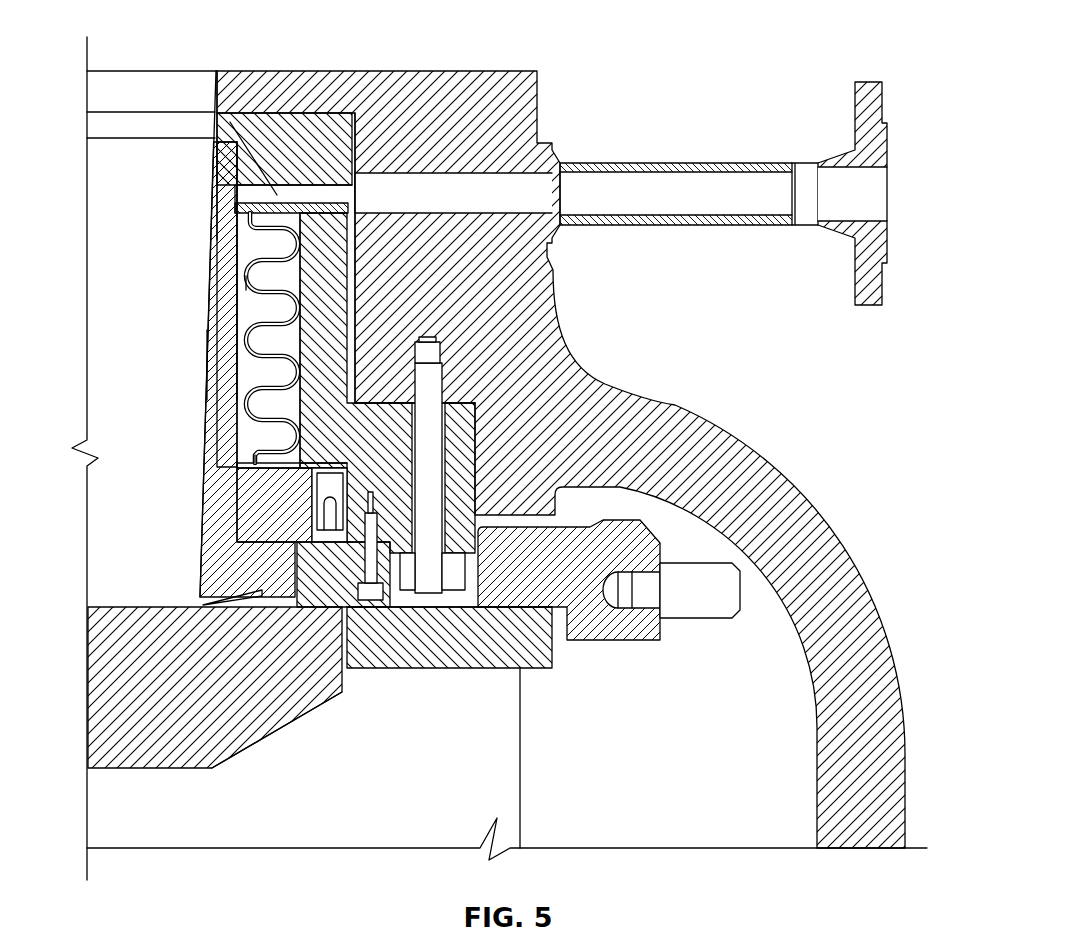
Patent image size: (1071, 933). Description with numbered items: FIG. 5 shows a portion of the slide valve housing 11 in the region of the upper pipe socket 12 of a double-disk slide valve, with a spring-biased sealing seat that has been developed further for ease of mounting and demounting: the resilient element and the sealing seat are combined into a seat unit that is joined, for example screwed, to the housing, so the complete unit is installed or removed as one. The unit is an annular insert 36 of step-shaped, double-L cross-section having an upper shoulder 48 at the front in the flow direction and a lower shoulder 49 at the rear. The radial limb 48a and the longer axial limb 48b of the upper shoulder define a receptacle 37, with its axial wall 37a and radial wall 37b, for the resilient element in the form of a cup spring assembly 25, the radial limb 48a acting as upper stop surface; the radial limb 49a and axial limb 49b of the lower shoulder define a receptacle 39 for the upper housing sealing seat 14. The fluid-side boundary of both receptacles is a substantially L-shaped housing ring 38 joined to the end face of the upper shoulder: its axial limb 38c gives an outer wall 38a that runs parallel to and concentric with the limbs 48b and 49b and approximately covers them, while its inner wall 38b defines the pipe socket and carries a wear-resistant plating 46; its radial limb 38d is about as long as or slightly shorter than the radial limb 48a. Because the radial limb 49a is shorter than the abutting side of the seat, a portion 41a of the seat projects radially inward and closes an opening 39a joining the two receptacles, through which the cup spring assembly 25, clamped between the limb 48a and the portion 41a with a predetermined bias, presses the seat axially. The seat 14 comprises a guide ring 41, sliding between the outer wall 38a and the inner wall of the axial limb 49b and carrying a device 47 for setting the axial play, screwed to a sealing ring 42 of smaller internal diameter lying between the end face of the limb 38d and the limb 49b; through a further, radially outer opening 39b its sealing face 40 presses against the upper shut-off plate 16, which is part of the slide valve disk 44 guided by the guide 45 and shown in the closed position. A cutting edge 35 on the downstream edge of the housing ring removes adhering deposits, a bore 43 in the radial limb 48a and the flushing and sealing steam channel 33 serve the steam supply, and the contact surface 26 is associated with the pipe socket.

The slide valve housing 11 is at (500, 71).
The upper pipe socket 12 is at (213, 103).
The upper housing sealing seat 14 is at (212, 768).
The upper shut-off plate 16 is at (103, 720).
The cup spring assembly 25 is at (255, 270).
The contact surface 26 is at (290, 200).
The flushing and sealing steam channel 33 is at (533, 183).
The cutting edge 35 is at (205, 600).
The annular insert 36 is at (337, 320).
The receptacle for the resilient element 37 is at (250, 245).
The axial wall of the receptacle 37a is at (257, 457).
The radial wall of the receptacle 37b is at (242, 310).
The housing ring 38 is at (210, 370).
The outer wall of the housing ring 38a is at (232, 340).
The inner wall of the housing ring 38b is at (235, 350).
The axial limb of the housing ring 38c is at (222, 206).
The radial limb of the housing ring 38d is at (217, 552).
The receptacle for the sealing seat 39 is at (377, 447).
The opening for the resilient element 39a is at (303, 446).
The opening for a sealing face of the sealing seat 39b is at (413, 610).
The sealing face of the sealing seat 40 is at (312, 607).
The guide ring 41 is at (352, 606).
The portion of the sealing seat 41a is at (253, 522).
The sealing ring of the sealing seat 42 is at (388, 670).
The bore for connecting to a flushing steam or sealing steam connection 43 is at (217, 100).
The slide valve disk 44 is at (545, 660).
The guide 45 is at (633, 630).
The plating 46 is at (213, 173).
The device for setting the axial play of the sealing seat 47 is at (328, 485).
The upper shoulder of the annular insert 48 is at (345, 242).
The radial limb of the upper shoulder 48a is at (293, 120).
The axial limb of the upper shoulder 48b is at (344, 283).
The lower shoulder of the annular insert 49 is at (473, 410).
The radial limb of the lower shoulder 49a is at (407, 443).
The axial limb of the lower shoulder 49b is at (462, 542).